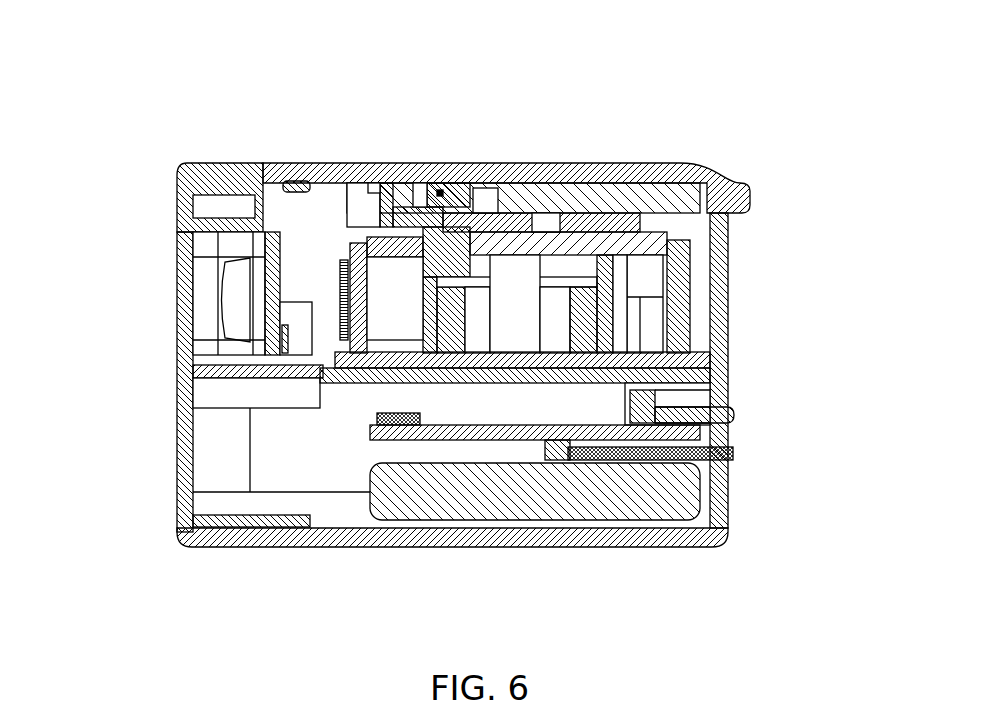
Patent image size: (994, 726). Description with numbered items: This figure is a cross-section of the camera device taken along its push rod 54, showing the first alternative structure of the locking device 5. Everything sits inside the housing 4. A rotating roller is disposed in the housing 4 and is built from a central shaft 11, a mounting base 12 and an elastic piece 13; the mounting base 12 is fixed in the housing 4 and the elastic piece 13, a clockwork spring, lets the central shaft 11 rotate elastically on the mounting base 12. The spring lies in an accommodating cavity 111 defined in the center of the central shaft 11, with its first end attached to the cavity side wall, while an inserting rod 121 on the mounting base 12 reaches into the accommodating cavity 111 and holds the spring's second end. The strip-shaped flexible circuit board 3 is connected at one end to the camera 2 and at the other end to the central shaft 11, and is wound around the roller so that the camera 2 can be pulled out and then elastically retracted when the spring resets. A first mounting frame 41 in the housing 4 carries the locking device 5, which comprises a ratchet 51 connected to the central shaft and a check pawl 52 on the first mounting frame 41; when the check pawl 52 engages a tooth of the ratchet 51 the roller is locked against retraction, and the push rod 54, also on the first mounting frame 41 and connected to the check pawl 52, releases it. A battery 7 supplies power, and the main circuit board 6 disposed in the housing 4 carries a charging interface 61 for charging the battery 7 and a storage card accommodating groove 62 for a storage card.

The camera 2 is at (233, 300).
The flexible circuit board 3 is at (420, 290).
The housing 4 is at (178, 432).
The locking device 5 is at (745, 160).
The base plate 6 is at (493, 437).
The battery 7 is at (660, 497).
The central shaft 11 is at (613, 292).
The mounting base 12 is at (427, 345).
The elastic piece 13 is at (592, 340).
The first mounting frame 41 is at (607, 235).
The ratchet 51 is at (413, 208).
The check pawl 52 is at (377, 221).
The push rod 54 is at (556, 198).
The charging interface 61 is at (677, 403).
The storage card accommodating groove 62 is at (567, 442).
The accommodating cavity 111 is at (465, 277).
The inserting rod 121 is at (522, 267).